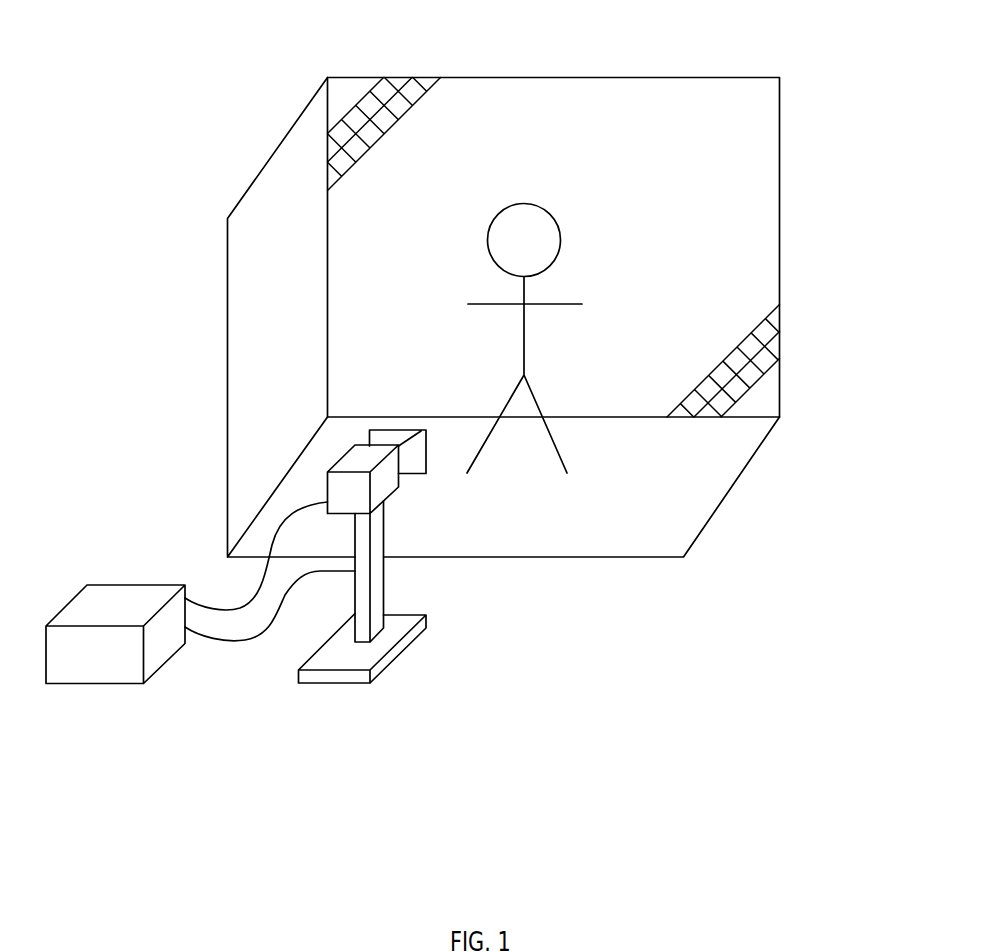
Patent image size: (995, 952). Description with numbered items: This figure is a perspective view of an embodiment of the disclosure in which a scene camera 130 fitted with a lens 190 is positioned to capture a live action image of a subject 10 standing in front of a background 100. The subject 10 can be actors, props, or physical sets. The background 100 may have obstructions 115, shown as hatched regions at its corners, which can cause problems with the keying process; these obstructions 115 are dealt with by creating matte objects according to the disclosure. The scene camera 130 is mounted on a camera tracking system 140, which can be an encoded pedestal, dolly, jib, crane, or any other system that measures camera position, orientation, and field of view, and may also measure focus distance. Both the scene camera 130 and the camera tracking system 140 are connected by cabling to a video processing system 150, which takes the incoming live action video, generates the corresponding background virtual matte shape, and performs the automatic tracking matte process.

The background 100 is at (638, 78).
The obstructions 115 is at (414, 78).
The subject 10 is at (552, 218).
The scene camera 130 is at (398, 487).
The lens 190 is at (426, 462).
The camera tracking system 140 is at (397, 652).
The video processing system 150 is at (155, 672).